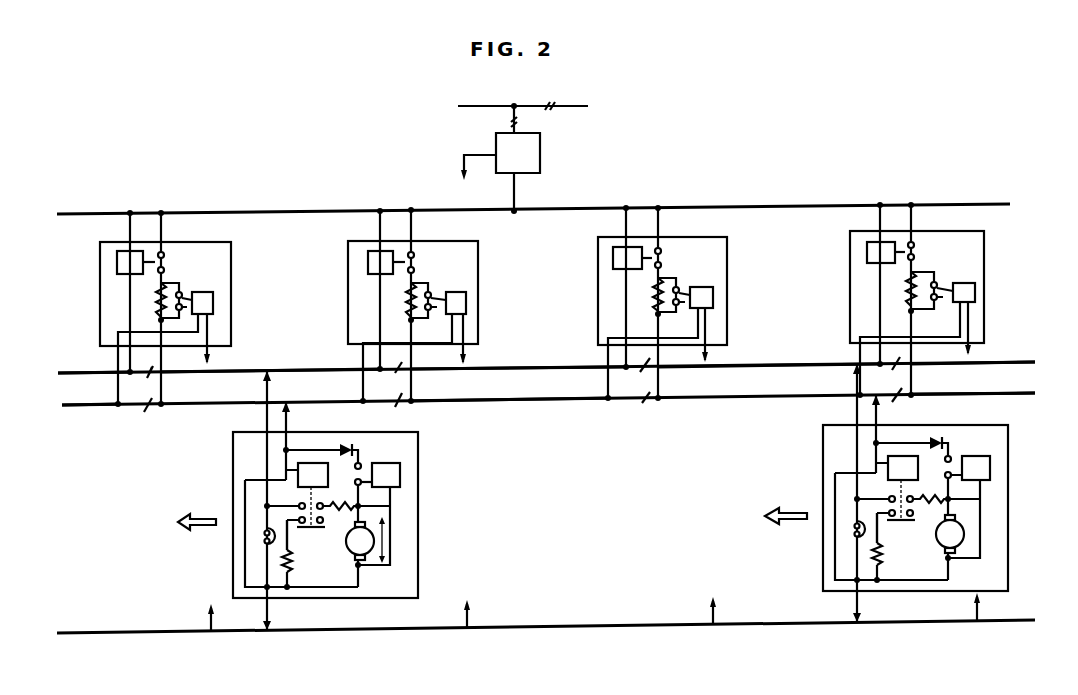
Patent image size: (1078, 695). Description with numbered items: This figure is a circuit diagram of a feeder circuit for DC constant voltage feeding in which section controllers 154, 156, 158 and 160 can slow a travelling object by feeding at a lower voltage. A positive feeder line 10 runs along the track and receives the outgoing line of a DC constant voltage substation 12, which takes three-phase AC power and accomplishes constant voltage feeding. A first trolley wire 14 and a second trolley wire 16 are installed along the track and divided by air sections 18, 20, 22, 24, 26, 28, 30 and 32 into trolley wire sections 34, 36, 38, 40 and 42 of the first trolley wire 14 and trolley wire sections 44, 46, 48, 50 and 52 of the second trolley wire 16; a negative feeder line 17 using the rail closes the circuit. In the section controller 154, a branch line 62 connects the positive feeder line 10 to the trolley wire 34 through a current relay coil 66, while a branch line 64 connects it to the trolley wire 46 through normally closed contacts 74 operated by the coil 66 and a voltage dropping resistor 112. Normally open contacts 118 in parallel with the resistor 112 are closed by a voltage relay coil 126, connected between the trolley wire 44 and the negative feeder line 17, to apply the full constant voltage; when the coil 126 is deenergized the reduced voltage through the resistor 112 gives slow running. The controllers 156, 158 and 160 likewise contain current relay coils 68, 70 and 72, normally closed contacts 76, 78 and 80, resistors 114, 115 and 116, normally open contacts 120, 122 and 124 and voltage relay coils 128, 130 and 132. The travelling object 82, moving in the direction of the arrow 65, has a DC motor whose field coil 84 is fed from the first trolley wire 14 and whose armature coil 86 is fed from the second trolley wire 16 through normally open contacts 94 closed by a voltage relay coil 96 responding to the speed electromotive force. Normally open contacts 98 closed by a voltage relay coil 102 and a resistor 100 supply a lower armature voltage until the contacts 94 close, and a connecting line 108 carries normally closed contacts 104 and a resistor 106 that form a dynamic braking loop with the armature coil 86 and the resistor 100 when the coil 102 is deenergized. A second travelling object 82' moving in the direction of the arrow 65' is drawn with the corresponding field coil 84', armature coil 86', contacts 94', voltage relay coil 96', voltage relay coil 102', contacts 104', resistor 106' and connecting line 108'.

The positive feeder line 10 is at (283, 212).
The DC constant voltage substation 12 is at (540, 146).
The first trolley wire 14 is at (47, 363).
The second trolley wire 16 is at (47, 395).
The negative feeder line 17 is at (120, 633).
The air section 18 is at (152, 372).
The air section 20 is at (400, 366).
The air section 22 is at (650, 366).
The air section 24 is at (900, 362).
The air section 26 is at (147, 406).
The air section 28 is at (398, 403).
The air section 30 is at (648, 400).
The air section 32 is at (895, 395).
The trolley wire section 34 is at (105, 372).
The trolley wire section 36 is at (228, 371).
The trolley wire section 38 is at (495, 368).
The trolley wire section 40 is at (762, 365).
The trolley wire section 42 is at (985, 362).
The trolley wire section 44 is at (105, 404).
The trolley wire section 46 is at (237, 406).
The trolley wire section 48 is at (548, 400).
The trolley wire section 50 is at (780, 398).
The trolley wire section 52 is at (1003, 394).
The branch line 62 is at (128, 234).
The branch line 64 is at (163, 238).
The arrow 65 is at (197, 505).
The direction arrow 65' is at (787, 501).
The current relay coil 66 is at (136, 262).
The current relay coil 68 is at (386, 262).
The current relay coil 70 is at (632, 258).
The current relay coil 72 is at (886, 252).
The normally closed contacts 74 is at (166, 262).
The normally closed contacts 76 is at (416, 262).
The normally closed contacts 78 is at (663, 258).
The normally closed contacts 80 is at (915, 250).
The travelling object 82 is at (329, 500).
The drive unit 82' is at (914, 493).
The field coil 84 is at (238, 542).
The thermal element 84' is at (825, 549).
The armature coil 86 is at (371, 540).
The motor 86' is at (950, 534).
The normally open contacts 94 is at (377, 460).
The contact 94' is at (970, 452).
The voltage relay coil 96 is at (386, 475).
The relay 96' is at (976, 468).
The normally open contacts 98 is at (302, 502).
The resistor 100 is at (351, 482).
The voltage relay coil 102 is at (313, 495).
The relay coil 102' is at (903, 488).
The normally closed contacts 104 is at (317, 535).
The contact 104' is at (909, 527).
The resistor 106 is at (312, 569).
The resistor 106' is at (904, 562).
The connecting line 108 is at (323, 543).
The connection 108' is at (905, 538).
The resistor 112 is at (158, 306).
The resistor 114 is at (408, 306).
The resistor 115 is at (655, 300).
The resistor 116 is at (908, 296).
The normally open contacts 118 is at (182, 300).
The normally open contacts 120 is at (432, 300).
The normally open contacts 122 is at (680, 295).
The normally open contacts 124 is at (938, 290).
The voltage relay coil 126 is at (214, 312).
The voltage relay coil 128 is at (466, 300).
The voltage relay coil 130 is at (713, 295).
The voltage relay coil 132 is at (975, 292).
The section controller 154 is at (100, 272).
The section controller 156 is at (348, 272).
The section controller 158 is at (598, 262).
The section controller 160 is at (850, 254).